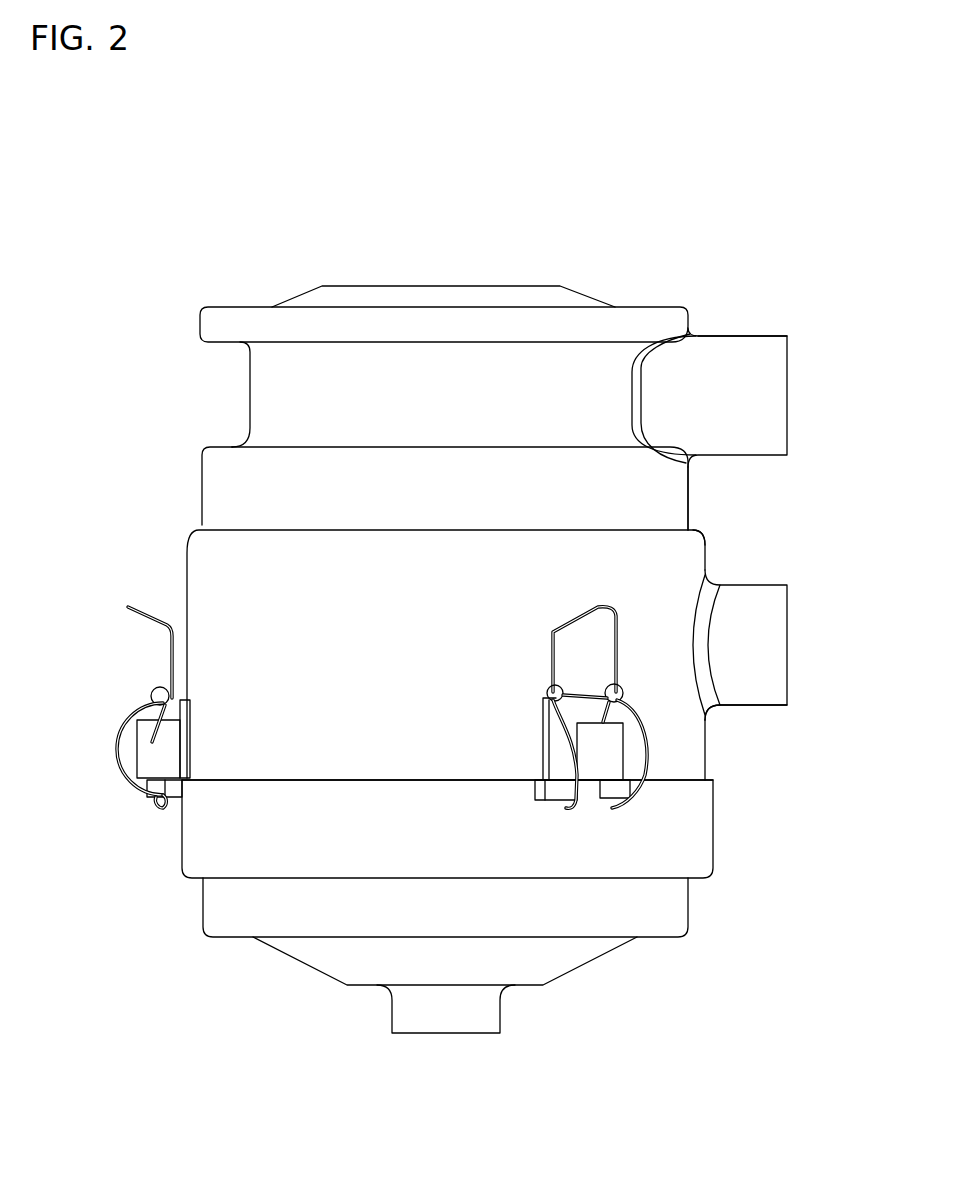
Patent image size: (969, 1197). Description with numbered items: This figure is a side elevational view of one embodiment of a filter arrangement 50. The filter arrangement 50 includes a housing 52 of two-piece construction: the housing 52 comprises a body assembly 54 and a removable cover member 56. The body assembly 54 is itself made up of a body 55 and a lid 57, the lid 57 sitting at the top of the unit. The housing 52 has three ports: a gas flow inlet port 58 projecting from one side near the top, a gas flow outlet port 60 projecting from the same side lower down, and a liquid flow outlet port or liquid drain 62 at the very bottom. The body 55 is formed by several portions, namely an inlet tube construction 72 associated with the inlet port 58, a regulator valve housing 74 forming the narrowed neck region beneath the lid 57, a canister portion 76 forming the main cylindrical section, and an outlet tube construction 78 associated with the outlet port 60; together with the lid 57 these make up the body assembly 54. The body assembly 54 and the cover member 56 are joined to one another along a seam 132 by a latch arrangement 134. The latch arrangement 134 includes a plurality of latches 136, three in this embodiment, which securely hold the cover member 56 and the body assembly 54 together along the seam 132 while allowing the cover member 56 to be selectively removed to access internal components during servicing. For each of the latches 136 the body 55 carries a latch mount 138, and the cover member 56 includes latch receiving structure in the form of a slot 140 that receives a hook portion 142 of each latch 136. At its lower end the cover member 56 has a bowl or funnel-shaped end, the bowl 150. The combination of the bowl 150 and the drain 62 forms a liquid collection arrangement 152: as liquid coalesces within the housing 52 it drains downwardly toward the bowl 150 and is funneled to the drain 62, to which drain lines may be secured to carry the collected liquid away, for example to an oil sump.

The filter arrangement 50 is at (182, 265).
The housing 52 is at (187, 553).
The body assembly 54 is at (200, 488).
The body 55 is at (690, 500).
The cover member 56 is at (718, 825).
The lid 57 is at (593, 299).
The gas flow inlet port 58 is at (787, 347).
The gas flow outlet port 60 is at (787, 633).
The liquid drain 62 is at (428, 1033).
The inlet tube construction 72 is at (723, 335).
The regulator valve housing 74 is at (250, 407).
The canister portion 76 is at (700, 537).
The outlet tube construction 78 is at (753, 707).
The seam 132 is at (315, 778).
The latch arrangement 134 is at (112, 640).
The latches 136 is at (114, 738).
The latch mount 138 is at (142, 758).
The slot 140 is at (583, 800).
The hook portion 142 is at (160, 805).
The bowl 150 is at (290, 958).
The liquid collection arrangement 152 is at (325, 1022).